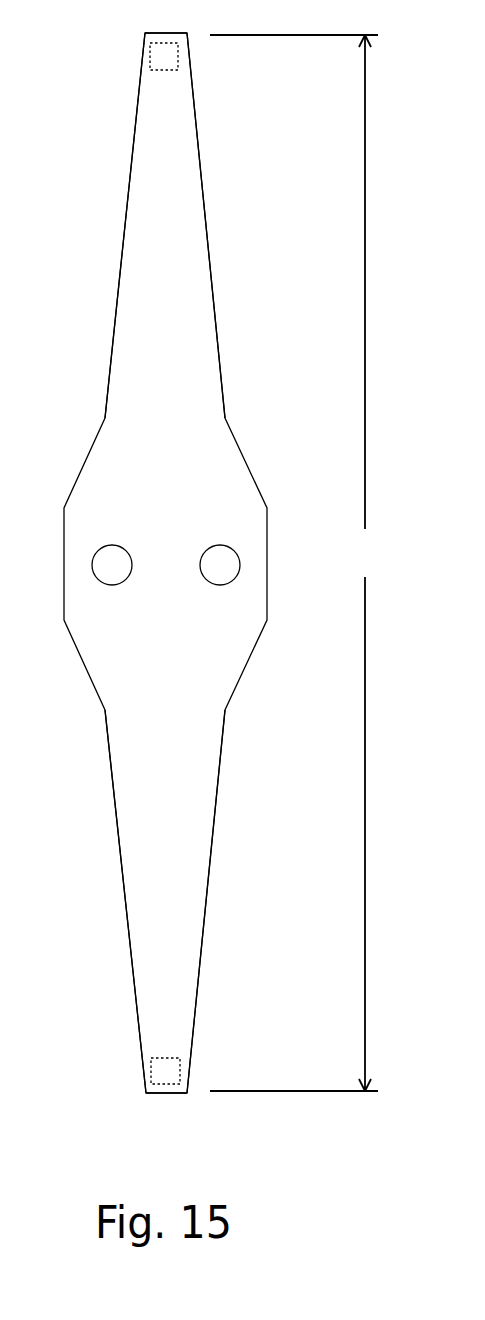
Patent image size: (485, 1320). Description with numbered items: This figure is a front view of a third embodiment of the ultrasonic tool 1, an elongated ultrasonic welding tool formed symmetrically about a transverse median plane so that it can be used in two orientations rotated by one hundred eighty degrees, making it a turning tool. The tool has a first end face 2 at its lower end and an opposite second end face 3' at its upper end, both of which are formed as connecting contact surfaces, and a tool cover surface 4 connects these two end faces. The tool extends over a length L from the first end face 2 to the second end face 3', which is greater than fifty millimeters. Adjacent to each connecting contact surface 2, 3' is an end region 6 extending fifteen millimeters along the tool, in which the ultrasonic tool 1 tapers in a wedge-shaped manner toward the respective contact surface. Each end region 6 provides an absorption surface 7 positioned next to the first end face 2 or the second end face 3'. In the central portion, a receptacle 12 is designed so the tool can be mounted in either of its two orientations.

The ultrasonic tool 1 is at (279, 285).
The first end face 2 is at (179, 1107).
The second end face 3' is at (127, 42).
The tool cover surface 4 is at (172, 348).
The end region 6 is at (82, 190).
The absorption surface 7 is at (167, 57).
The receptacle 12 is at (199, 529).
The length L is at (294, 563).